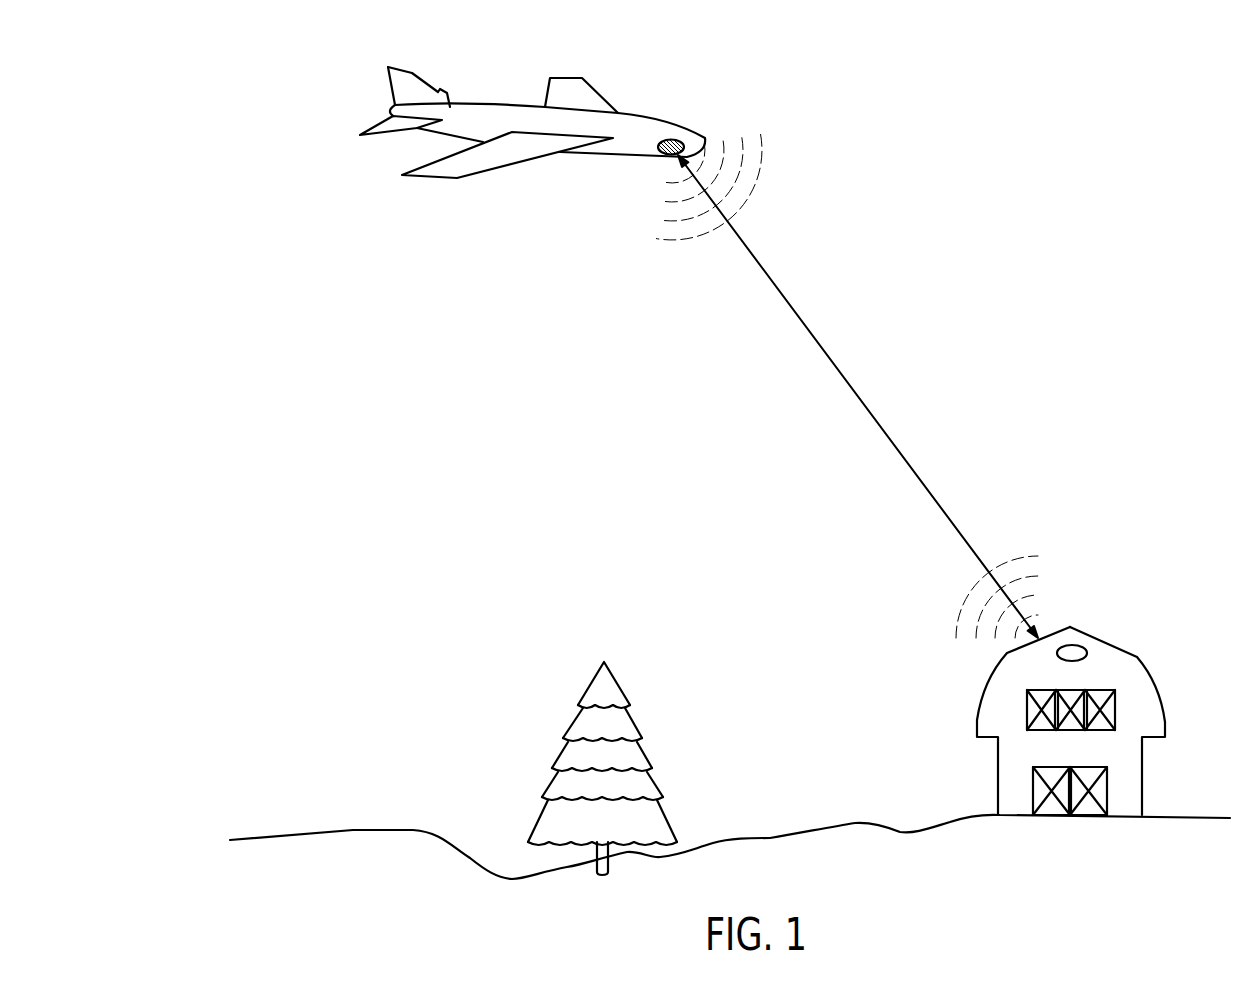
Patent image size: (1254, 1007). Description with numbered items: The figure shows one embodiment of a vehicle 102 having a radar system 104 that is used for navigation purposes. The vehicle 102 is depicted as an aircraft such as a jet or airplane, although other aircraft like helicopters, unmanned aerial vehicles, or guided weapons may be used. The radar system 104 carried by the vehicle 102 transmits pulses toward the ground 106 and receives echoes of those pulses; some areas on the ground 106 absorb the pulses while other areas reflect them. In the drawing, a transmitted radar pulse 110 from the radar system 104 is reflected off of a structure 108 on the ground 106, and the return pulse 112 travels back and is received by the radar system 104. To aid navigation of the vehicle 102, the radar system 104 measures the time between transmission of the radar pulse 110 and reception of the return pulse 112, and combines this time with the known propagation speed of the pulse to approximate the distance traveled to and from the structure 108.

The vehicle 102 is at (630, 124).
The radar system 104 is at (678, 130).
The ground 106 is at (730, 779).
The structure 108 is at (1143, 665).
The radar pulse 110 is at (681, 241).
The return pulse 112 is at (1019, 543).